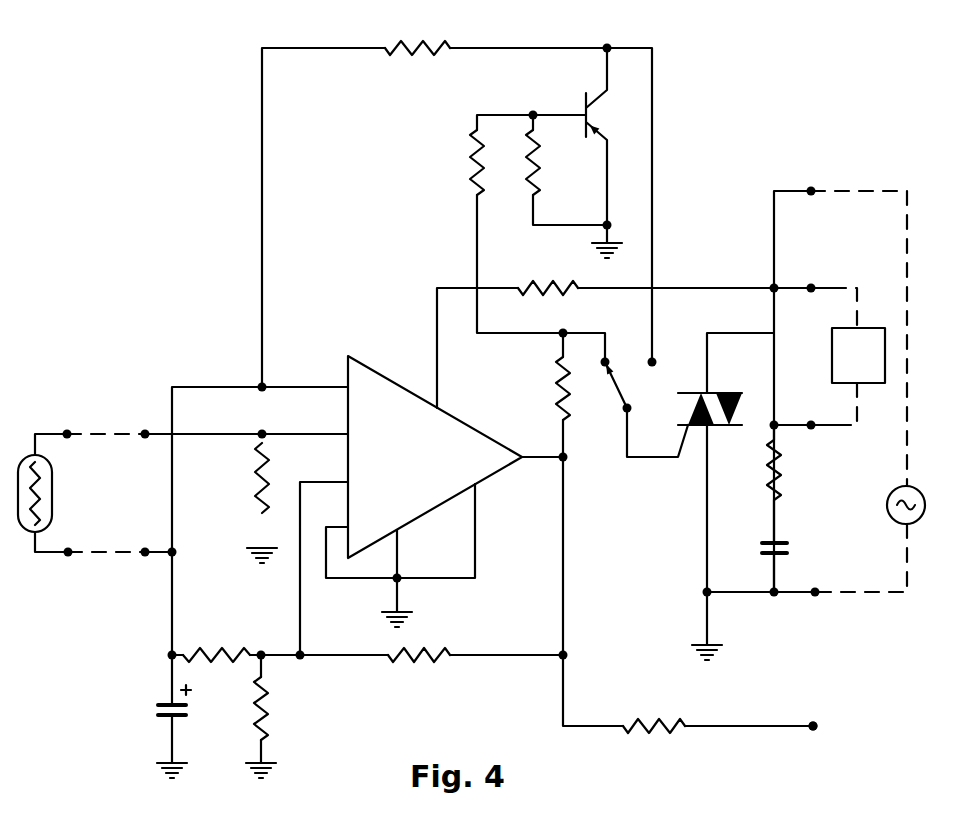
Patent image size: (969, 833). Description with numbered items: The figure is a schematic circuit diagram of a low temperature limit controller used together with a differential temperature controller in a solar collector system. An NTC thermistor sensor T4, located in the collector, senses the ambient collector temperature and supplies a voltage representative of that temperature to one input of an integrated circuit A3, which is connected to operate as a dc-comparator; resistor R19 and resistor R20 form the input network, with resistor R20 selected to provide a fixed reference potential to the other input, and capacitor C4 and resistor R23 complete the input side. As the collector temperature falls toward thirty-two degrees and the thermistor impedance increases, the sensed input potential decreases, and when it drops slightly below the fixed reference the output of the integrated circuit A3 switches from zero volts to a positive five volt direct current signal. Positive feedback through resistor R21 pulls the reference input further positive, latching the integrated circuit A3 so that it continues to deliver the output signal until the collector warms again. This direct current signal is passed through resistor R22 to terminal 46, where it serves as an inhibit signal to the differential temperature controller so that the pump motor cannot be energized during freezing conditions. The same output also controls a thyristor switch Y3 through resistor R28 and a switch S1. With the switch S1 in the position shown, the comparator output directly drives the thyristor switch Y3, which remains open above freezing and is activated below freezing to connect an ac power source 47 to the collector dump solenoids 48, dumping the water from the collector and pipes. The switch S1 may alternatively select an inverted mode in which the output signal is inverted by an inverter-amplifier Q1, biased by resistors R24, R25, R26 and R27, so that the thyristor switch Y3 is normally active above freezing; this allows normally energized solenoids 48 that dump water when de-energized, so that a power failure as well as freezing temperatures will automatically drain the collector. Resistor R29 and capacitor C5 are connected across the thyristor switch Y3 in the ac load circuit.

The terminal 46 is at (813, 722).
The ac power source 47 is at (892, 492).
The solenoids 48 is at (867, 328).
The resistor R24 is at (417, 37).
The resistor R26 is at (451, 162).
The resistor R25 is at (559, 162).
The resistor R27 is at (548, 277).
The resistor R28 is at (537, 388).
The resistor R19 is at (240, 478).
The resistor R20 is at (216, 645).
The resistor R21 is at (419, 645).
The resistor R23 is at (286, 708).
The resistor R22 is at (654, 716).
The resistor R29 is at (798, 470).
The capacitor C4 is at (206, 711).
The capacitor C5 is at (812, 549).
The inverter-amplifier Q1 is at (560, 95).
The switch S1 is at (646, 395).
The thyristor switch Y3 is at (735, 385).
The NTC thermistor sensor T4 is at (51, 493).
The integrated circuit A3 is at (429, 461).